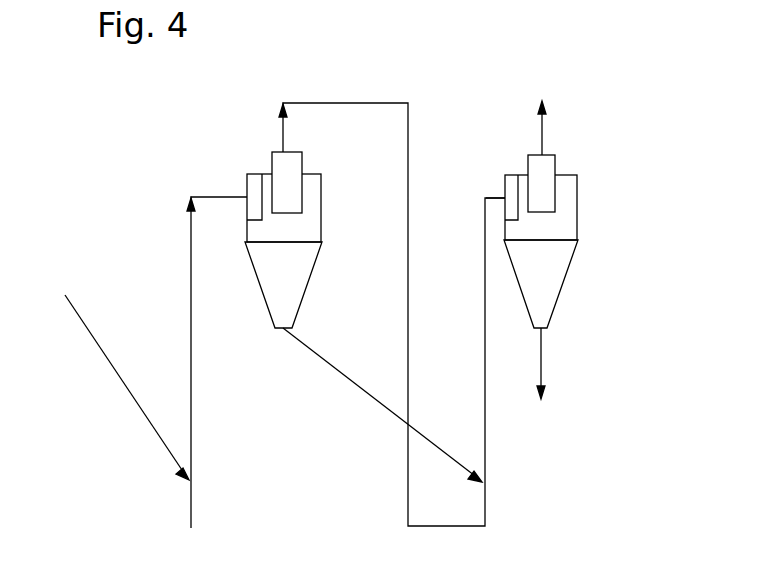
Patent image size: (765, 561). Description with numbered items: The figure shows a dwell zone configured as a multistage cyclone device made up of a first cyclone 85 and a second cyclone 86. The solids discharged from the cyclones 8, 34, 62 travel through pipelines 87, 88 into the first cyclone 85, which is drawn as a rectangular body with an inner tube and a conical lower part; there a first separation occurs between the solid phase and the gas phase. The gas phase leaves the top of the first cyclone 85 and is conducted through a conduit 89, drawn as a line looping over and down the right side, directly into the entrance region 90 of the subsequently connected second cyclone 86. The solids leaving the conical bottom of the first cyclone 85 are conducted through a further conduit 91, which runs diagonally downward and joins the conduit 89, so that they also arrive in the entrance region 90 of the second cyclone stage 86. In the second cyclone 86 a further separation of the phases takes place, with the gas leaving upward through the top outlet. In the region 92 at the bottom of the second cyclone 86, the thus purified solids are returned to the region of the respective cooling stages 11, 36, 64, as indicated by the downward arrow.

The first cyclone 85 is at (294, 278).
The second cyclone 86 is at (552, 272).
The pipeline 87 is at (133, 398).
The pipeline 88 is at (191, 355).
The conduit 89 is at (340, 101).
The entrance region 90 is at (505, 196).
The further conduit 91 is at (350, 384).
The region 92 is at (541, 365).
The cyclone 8 is at (111, 376).
The cyclone 34 is at (111, 376).
The cyclone 62 is at (111, 376).
The cooling stage 11 is at (570, 385).
The cooling stage 36 is at (570, 385).
The cooling stage 64 is at (570, 385).